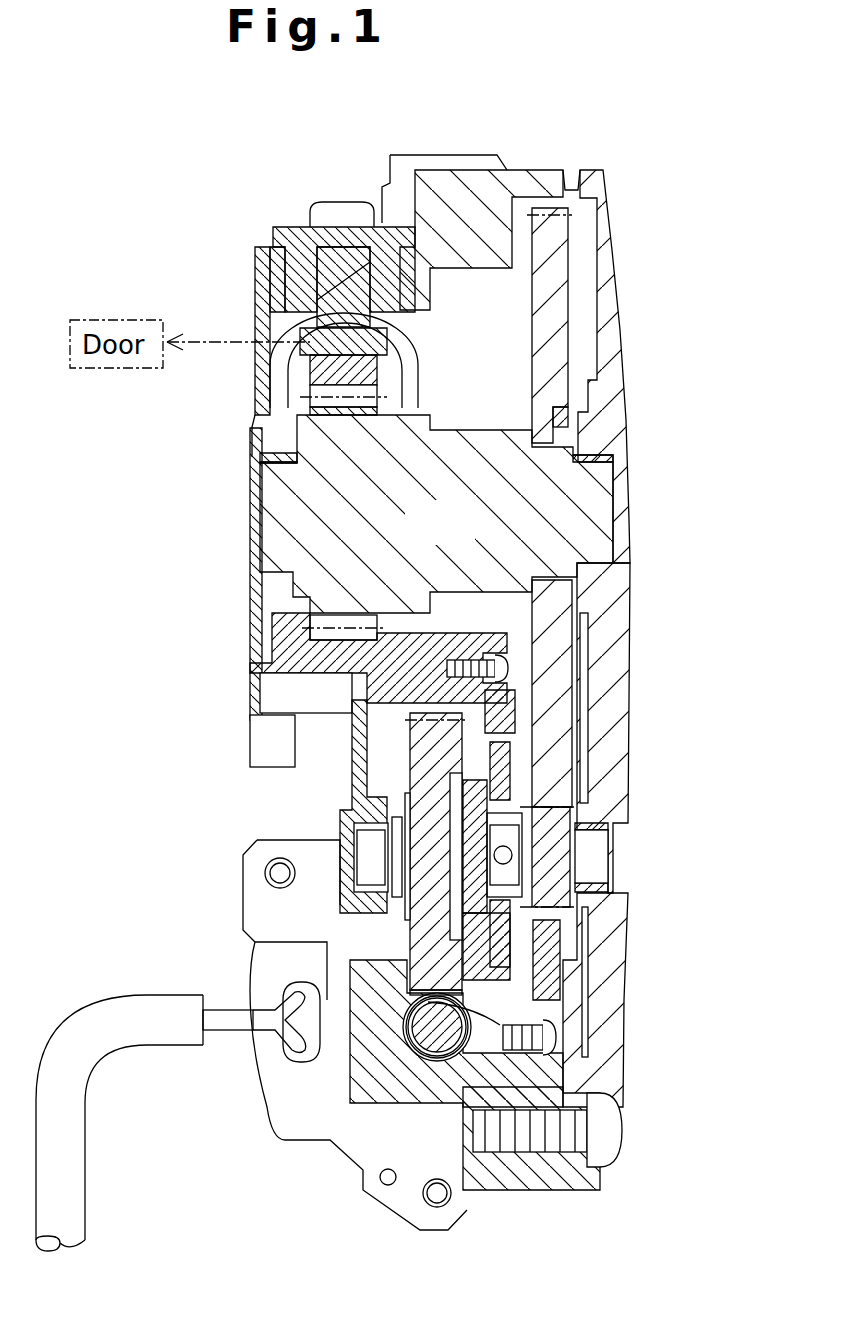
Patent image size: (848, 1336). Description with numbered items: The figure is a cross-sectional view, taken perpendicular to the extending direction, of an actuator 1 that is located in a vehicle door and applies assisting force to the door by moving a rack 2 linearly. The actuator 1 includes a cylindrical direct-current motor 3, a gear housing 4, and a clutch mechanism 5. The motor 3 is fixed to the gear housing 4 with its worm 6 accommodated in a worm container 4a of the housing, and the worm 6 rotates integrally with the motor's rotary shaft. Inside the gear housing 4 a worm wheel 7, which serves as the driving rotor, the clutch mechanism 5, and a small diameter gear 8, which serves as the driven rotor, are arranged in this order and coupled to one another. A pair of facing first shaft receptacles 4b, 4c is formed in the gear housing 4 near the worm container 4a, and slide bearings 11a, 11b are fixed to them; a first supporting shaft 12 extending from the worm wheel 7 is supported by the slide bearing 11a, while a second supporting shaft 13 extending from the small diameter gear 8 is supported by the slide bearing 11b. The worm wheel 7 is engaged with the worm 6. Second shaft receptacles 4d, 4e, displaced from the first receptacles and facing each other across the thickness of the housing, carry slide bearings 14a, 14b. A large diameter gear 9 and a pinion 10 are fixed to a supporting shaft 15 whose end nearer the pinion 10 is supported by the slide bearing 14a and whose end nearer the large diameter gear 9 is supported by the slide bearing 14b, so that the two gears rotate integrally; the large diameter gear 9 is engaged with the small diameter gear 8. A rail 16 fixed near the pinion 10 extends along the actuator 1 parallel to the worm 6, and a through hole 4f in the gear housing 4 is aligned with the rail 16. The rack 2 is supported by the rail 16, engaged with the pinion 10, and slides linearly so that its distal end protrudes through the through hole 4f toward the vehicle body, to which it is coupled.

The actuator 1 is at (494, 136).
The rack 2 is at (370, 370).
The direct-current motor 3 is at (250, 1082).
The gear housing 4 is at (628, 328).
The worm container 4a is at (415, 1066).
The first shaft receptacle 4b is at (360, 845).
The first shaft receptacle 4c is at (603, 884).
The second shaft receptacle 4d is at (262, 512).
The second shaft receptacle 4e is at (613, 512).
The through hole 4f is at (292, 384).
The clutch mechanism 5 is at (522, 778).
The worm 6 is at (430, 1000).
The worm wheel 7 is at (420, 750).
The small diameter gear 8 is at (562, 876).
The large diameter gear 9 is at (560, 640).
The pinion 10 is at (342, 415).
The slide bearing 11a is at (378, 808).
The slide bearing 11b is at (606, 824).
The first supporting shaft 12 is at (368, 863).
The second supporting shaft 13 is at (604, 838).
The slide bearing 14a is at (250, 442).
The slide bearing 14b is at (612, 440).
The supporting shaft 15 is at (458, 534).
The rail 16 is at (372, 344).